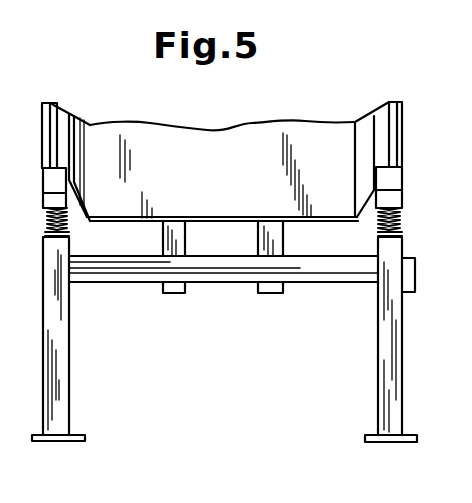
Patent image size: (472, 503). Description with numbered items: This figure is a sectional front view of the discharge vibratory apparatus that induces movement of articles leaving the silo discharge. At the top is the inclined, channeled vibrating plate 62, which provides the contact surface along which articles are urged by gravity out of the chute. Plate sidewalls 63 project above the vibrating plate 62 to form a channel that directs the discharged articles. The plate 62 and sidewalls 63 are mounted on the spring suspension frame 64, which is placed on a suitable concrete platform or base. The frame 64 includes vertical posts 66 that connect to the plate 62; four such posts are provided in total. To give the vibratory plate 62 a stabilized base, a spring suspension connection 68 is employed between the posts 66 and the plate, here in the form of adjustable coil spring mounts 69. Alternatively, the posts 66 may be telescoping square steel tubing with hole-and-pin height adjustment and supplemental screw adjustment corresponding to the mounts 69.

The vibrating plate 62 is at (231, 181).
The plate sidewalls 63 is at (365, 140).
The spring suspension frame 64 is at (395, 392).
The vertical posts 66 is at (65, 400).
The spring suspension connection 68 is at (47, 228).
The adjustable coil spring mounts 69 is at (47, 213).